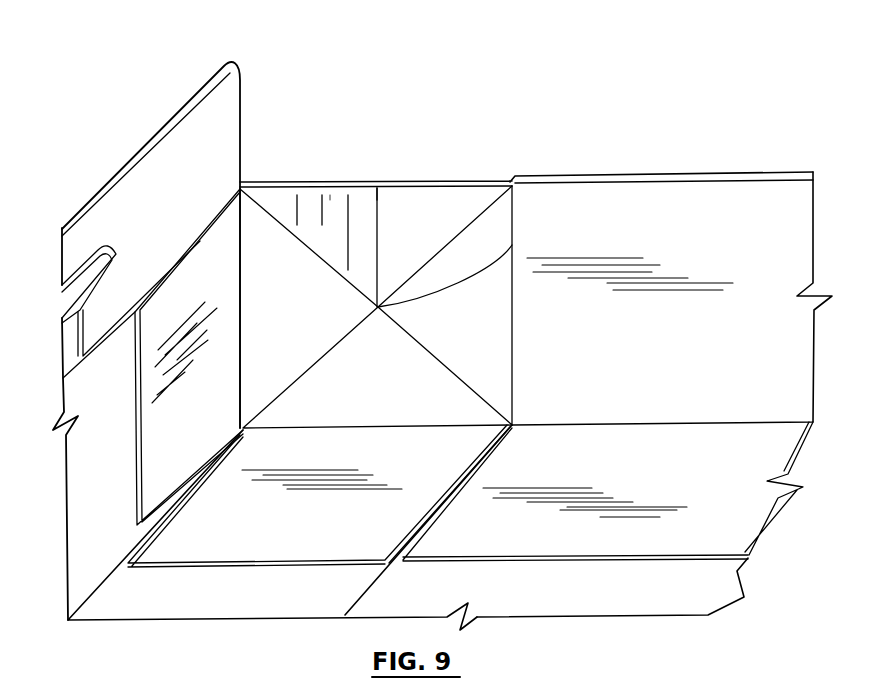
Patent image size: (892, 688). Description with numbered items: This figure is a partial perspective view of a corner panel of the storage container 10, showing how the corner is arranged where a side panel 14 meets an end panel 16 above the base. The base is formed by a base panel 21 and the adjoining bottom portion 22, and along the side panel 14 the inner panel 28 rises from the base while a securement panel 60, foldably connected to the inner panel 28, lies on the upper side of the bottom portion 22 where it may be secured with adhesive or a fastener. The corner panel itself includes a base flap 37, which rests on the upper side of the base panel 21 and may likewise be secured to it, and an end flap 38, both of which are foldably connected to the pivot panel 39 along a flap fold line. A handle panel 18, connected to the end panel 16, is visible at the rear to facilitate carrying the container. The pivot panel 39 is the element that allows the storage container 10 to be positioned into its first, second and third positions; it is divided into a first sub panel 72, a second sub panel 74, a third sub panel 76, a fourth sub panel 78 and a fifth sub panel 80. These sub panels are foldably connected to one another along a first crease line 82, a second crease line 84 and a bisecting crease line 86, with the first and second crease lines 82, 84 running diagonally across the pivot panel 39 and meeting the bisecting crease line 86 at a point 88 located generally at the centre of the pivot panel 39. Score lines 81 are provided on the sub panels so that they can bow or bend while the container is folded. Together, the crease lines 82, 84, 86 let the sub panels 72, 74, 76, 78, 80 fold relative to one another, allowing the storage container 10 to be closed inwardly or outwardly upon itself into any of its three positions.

The storage container 10 is at (670, 57).
The side panel 14 is at (702, 168).
The end panel 16 is at (62, 567).
The handle panel 18 is at (157, 172).
The base panel 21 is at (272, 530).
The bottom portion 22 is at (546, 521).
The inner panel 28 is at (672, 298).
The base flap 37 is at (319, 496).
The end flap 38 is at (189, 357).
The pivot panel 39 is at (335, 148).
The securement panel 60 is at (608, 491).
The first sub panel 72 is at (407, 247).
The second sub panel 74 is at (445, 305).
The third sub panel 76 is at (377, 367).
The fourth sub panel 78 is at (309, 308).
The fifth sub panel 80 is at (292, 193).
The score line 81 is at (347, 205).
The first crease line 82 is at (480, 208).
The second crease line 84 is at (277, 198).
The bisecting crease line 86 is at (380, 203).
The point 88 is at (512, 245).